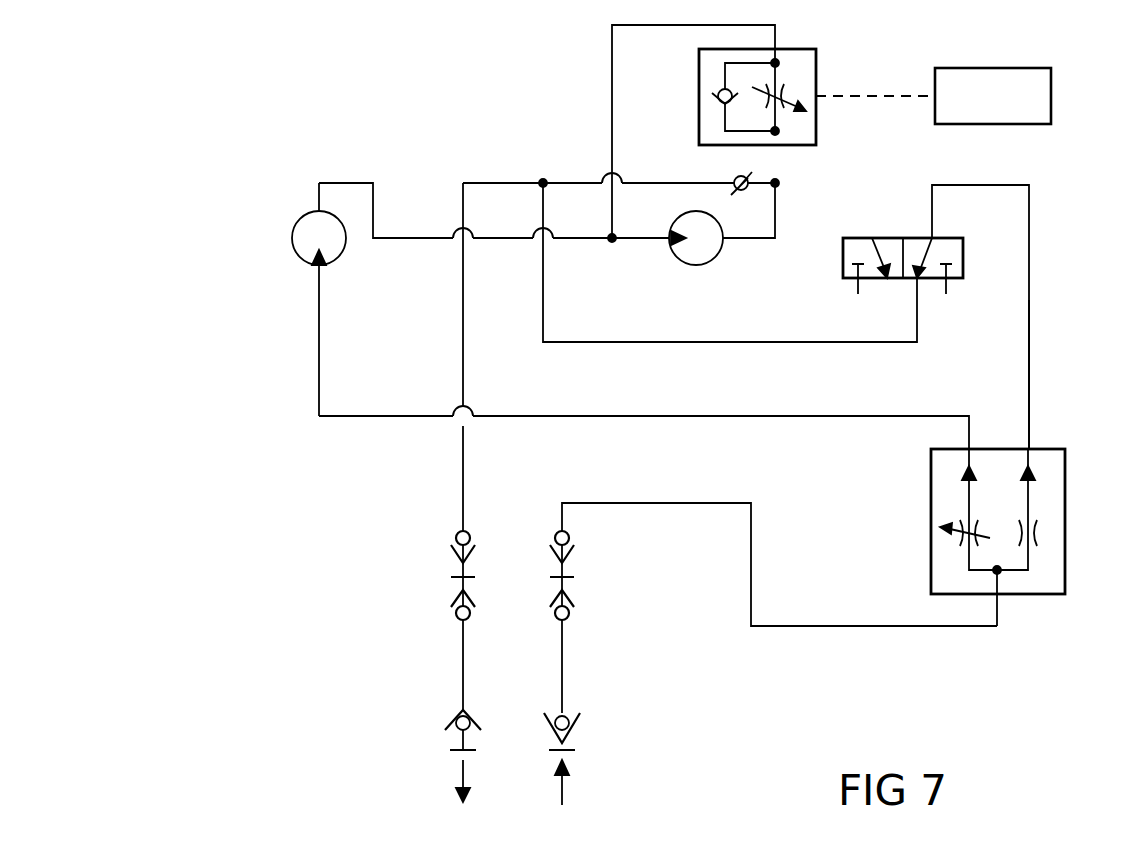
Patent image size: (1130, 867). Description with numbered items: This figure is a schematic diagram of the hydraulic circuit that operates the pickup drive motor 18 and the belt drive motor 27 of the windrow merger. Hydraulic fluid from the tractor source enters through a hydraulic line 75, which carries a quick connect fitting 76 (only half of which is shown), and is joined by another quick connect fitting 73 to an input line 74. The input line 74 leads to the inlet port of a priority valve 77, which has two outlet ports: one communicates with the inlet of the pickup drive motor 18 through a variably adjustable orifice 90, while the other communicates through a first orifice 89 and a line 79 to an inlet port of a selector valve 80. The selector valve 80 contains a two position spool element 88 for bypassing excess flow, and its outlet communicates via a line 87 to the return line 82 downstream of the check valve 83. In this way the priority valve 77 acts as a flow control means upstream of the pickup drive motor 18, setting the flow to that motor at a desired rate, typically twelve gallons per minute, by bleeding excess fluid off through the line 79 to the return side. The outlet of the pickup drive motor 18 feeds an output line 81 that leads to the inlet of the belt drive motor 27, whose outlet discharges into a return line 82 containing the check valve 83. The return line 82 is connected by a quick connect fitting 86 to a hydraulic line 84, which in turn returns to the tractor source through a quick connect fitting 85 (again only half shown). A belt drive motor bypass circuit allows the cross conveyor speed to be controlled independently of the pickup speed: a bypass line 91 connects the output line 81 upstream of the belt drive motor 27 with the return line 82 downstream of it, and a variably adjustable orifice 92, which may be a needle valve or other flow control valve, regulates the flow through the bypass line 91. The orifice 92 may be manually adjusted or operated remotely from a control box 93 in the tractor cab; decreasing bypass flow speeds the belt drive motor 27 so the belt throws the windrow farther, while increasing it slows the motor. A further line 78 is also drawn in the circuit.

The pickup drive motor 18 is at (298, 250).
The belt drive motor 27 is at (680, 262).
The quick connect fitting 73 is at (582, 567).
The input line 74 is at (752, 532).
The hydraulic line 75 is at (565, 668).
The quick connect fitting 76 is at (572, 728).
The priority valve 77 is at (1072, 510).
The line 78 is at (818, 416).
The line 79 is at (1029, 338).
The selector valve 80 is at (836, 262).
The output line 81 is at (392, 240).
The return line 82 is at (515, 183).
The check valve 83 is at (730, 175).
The hydraulic line 84 is at (460, 650).
The quick connect fitting 85 is at (452, 718).
The quick connect fitting 86 is at (440, 571).
The line 87 is at (705, 342).
The two position spool element 88 is at (963, 258).
The first orifice 89 is at (1040, 532).
The variably adjustable orifice 90 is at (955, 538).
The bypass line 91 is at (612, 67).
The variably adjustable orifice 92 is at (792, 88).
The control box 93 is at (1036, 68).